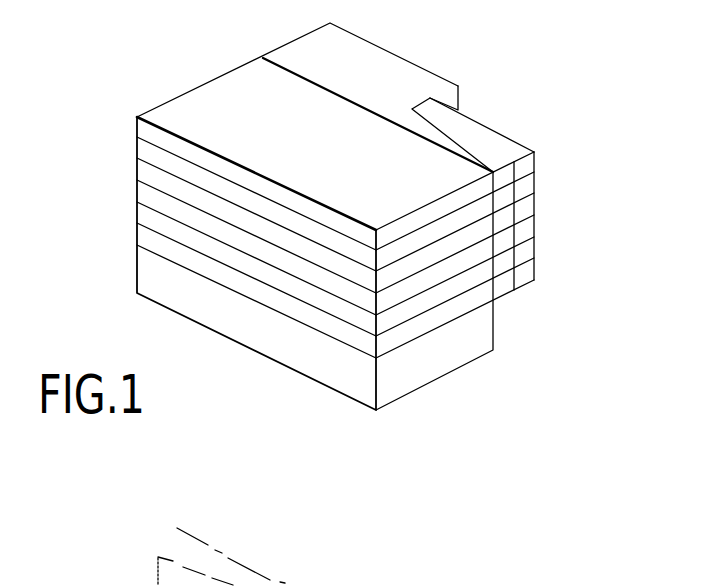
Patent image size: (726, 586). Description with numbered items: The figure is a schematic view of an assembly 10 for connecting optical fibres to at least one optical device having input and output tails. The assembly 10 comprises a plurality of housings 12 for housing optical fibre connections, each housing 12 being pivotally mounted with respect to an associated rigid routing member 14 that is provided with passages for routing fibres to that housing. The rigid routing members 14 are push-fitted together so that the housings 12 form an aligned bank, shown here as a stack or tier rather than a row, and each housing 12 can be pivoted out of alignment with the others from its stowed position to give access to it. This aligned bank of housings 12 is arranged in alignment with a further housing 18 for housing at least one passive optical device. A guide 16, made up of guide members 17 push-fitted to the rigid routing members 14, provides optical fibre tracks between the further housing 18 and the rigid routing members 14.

The assembly 10 is at (123, 222).
The housing 12 is at (147, 130).
The rigid routing member 14 is at (312, 60).
The guide 16 is at (551, 180).
The guide member 17 is at (484, 124).
The further housing 18 is at (282, 352).